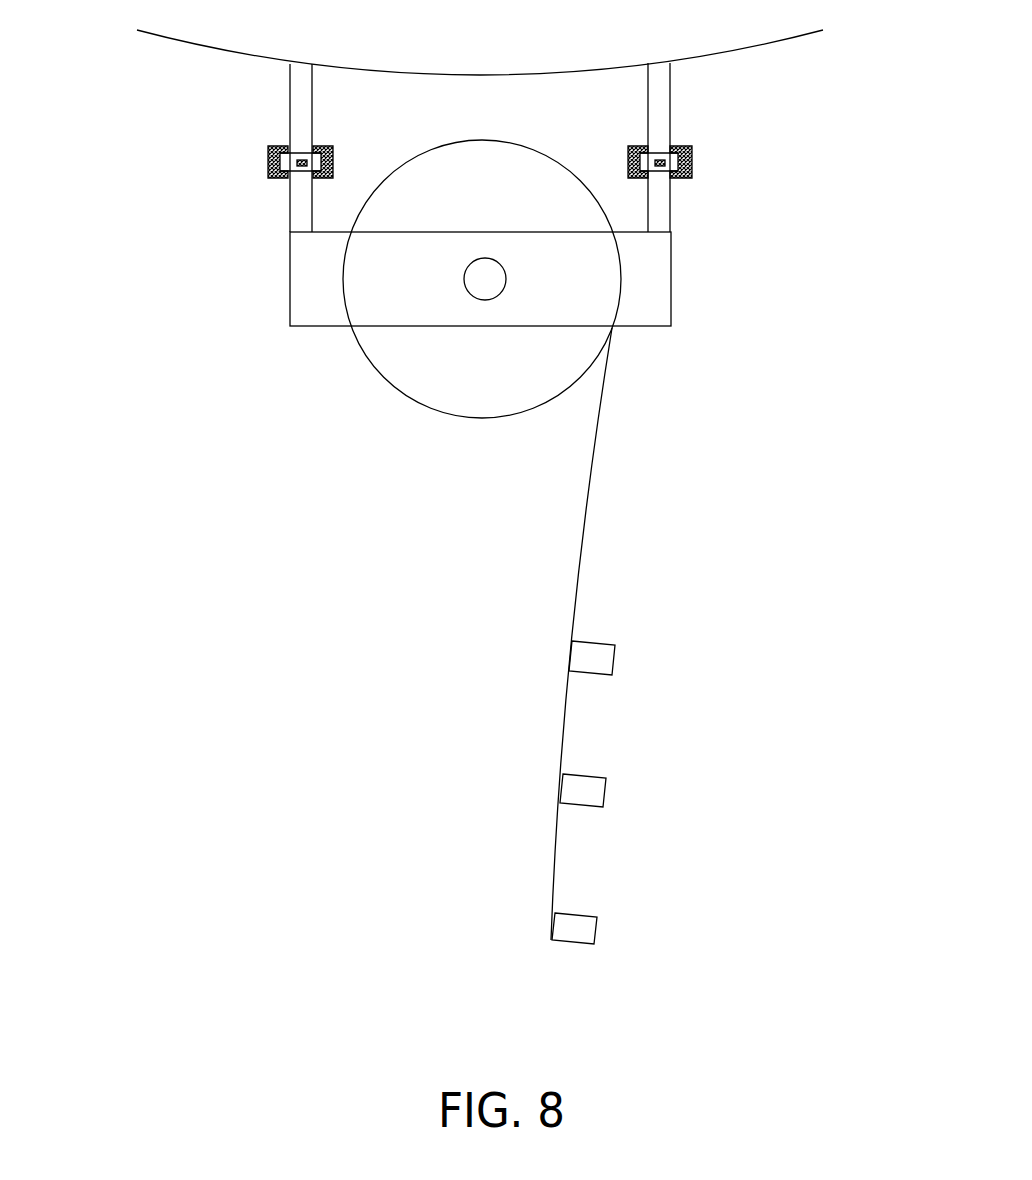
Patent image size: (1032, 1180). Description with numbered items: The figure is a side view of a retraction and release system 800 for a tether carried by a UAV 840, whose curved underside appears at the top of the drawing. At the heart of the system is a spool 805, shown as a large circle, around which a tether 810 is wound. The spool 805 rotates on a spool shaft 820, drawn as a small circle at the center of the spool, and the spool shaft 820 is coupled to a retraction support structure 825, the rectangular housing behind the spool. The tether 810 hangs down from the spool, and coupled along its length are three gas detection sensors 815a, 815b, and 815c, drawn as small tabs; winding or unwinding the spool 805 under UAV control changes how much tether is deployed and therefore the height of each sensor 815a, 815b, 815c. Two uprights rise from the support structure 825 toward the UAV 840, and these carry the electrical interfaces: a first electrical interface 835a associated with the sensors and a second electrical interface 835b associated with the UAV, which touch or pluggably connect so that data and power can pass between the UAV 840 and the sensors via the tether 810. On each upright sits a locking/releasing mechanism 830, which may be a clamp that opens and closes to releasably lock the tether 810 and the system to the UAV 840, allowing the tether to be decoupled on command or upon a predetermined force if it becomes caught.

The retraction and release system 800 is at (192, 197).
The spool 805 is at (470, 417).
The tether 810 is at (585, 533).
The gas detection sensor 815a is at (615, 652).
The gas detection sensor 815b is at (604, 783).
The gas detection sensor 815c is at (597, 923).
The spool shaft 820 is at (466, 288).
The retraction support structure 825 is at (671, 277).
The locking/releasing mechanism 830 is at (628, 160).
The first electrical interface 835a is at (303, 178).
The second electrical interface 835b is at (303, 157).
The UAV 840 is at (747, 53).